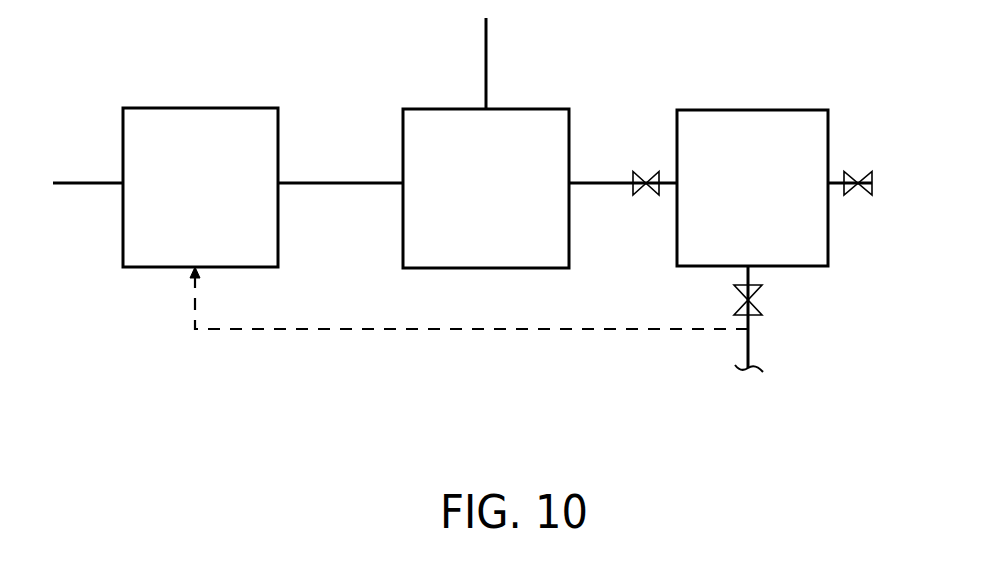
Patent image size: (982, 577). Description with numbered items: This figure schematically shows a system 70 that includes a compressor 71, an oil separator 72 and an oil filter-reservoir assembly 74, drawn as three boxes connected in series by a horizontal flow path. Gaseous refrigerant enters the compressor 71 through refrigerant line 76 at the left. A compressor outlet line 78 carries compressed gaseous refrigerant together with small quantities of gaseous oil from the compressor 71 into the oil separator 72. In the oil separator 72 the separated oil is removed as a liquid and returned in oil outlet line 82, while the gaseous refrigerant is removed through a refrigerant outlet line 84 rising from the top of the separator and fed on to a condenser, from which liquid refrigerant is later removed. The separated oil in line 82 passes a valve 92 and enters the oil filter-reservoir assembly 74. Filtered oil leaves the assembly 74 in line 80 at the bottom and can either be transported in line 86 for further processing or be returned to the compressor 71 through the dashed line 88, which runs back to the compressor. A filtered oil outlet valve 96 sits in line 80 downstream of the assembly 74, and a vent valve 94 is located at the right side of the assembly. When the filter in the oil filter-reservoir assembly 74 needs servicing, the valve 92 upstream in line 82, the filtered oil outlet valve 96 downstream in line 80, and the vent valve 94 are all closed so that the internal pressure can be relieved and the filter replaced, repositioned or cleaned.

The system 70 is at (603, 395).
The compressor 71 is at (191, 108).
The oil separator 72 is at (447, 109).
The oil filter-reservoir assembly 74 is at (755, 110).
The refrigerant line 76 is at (77, 183).
The compressor outlet line 78 is at (305, 183).
The line 80 is at (752, 273).
The oil outlet line 82 is at (607, 183).
The refrigerant outlet line 84 is at (488, 83).
The line 86 is at (752, 342).
The line 88 is at (323, 330).
The valve 92 is at (658, 172).
The vent valve 94 is at (849, 172).
The filtered oil outlet valve 96 is at (753, 307).